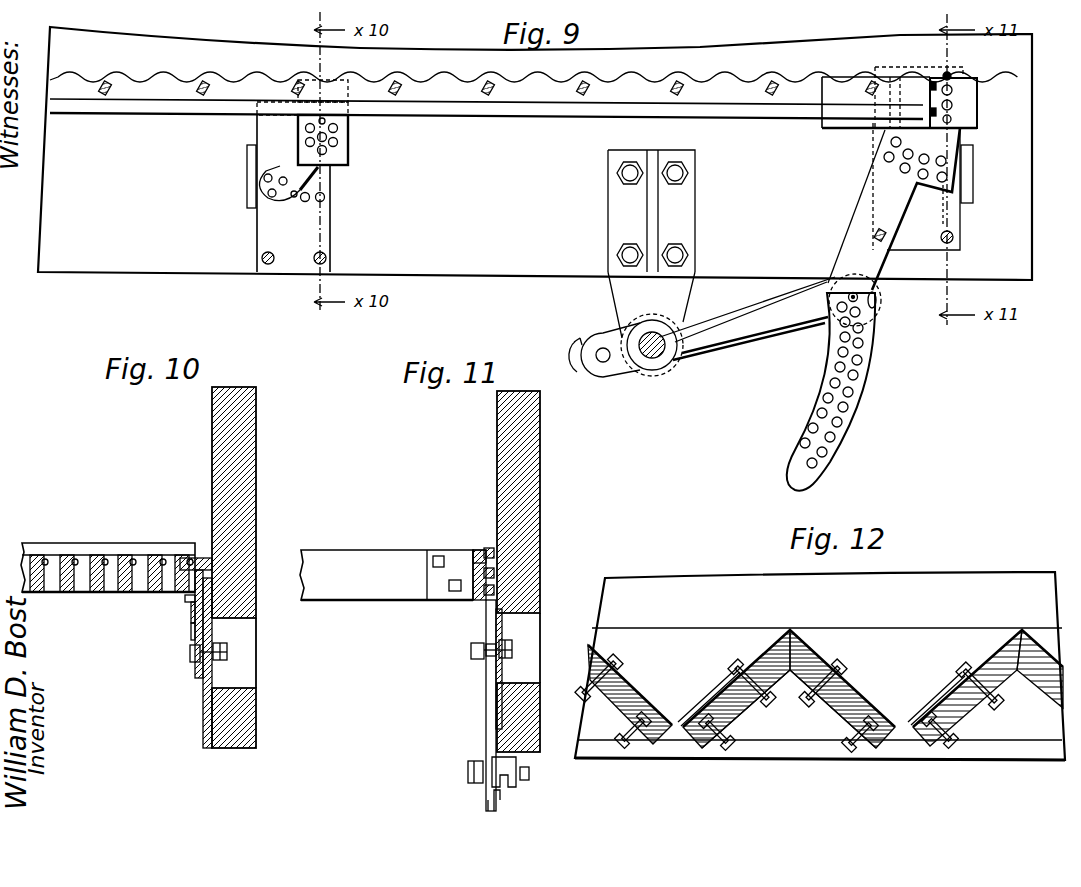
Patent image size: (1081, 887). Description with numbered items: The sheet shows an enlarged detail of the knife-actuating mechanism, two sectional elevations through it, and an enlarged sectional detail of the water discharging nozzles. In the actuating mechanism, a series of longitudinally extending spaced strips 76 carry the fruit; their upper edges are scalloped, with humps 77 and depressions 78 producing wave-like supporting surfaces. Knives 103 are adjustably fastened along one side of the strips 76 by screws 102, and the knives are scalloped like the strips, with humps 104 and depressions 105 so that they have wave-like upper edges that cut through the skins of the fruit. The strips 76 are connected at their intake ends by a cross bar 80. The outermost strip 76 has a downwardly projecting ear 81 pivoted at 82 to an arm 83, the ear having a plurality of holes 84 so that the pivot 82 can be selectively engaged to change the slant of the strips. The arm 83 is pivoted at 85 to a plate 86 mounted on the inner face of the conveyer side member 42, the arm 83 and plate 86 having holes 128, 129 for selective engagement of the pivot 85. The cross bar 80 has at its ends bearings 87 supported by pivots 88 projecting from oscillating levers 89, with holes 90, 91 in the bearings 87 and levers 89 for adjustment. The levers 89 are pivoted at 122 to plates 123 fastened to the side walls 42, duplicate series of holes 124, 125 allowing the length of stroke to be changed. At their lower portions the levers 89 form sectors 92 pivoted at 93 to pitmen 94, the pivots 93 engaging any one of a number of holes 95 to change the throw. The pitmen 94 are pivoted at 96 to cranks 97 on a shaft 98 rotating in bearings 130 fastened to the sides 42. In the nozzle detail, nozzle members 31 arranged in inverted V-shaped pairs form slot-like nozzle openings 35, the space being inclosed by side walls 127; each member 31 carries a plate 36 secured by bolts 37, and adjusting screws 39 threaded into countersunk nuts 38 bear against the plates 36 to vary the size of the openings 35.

In FIG. 12, the nozzle member 31 is at (1010, 765).
In FIG. 12, the nozzle opening 35 is at (905, 715).
In FIG. 12, the plate 36 is at (930, 665).
In FIG. 12, the bolt 37 is at (970, 646).
In FIG. 12, the nut 38 is at (892, 765).
In FIG. 12, the adjusting screw 39 is at (945, 770).
In FIG. 9, the side member 42 is at (120, 256).
In FIG. 10, the side member 42 is at (245, 465).
In FIG. 11, the side member 42 is at (540, 448).
In FIG. 9, the strip 76 is at (118, 114).
In FIG. 10, the strip 76 is at (100, 600).
In FIG. 10, the hump 77 is at (41, 539).
In FIG. 10, the depression 78 is at (68, 550).
In FIG. 9, the cross bar 80 is at (905, 90).
In FIG. 11, the cross bar 80 is at (345, 550).
In FIG. 9, the ear 81 is at (348, 129).
In FIG. 10, the ear 81 is at (191, 632).
In FIG. 9, the pivot 82 is at (300, 110).
In FIG. 10, the pivot 82 is at (185, 598).
In FIG. 9, the arm 83 is at (283, 152).
In FIG. 10, the arm 83 is at (200, 672).
In FIG. 9, the hole 84 is at (333, 150).
In FIG. 10, the hole 84 is at (191, 612).
In FIG. 9, the pivot 85 is at (292, 172).
In FIG. 10, the pivot 85 is at (190, 652).
In FIG. 9, the plate 86 is at (268, 240).
In FIG. 10, the plate 86 is at (203, 712).
In FIG. 9, the bearing 87 is at (962, 78).
In FIG. 11, the bearing 87 is at (474, 602).
In FIG. 9, the pivot 88 is at (952, 90).
In FIG. 11, the pivot 88 is at (480, 550).
In FIG. 9, the oscillating lever 89 is at (855, 245).
In FIG. 11, the oscillating lever 89 is at (488, 692).
In FIG. 9, the hole 90 is at (952, 105).
In FIG. 11, the hole 90 is at (473, 580).
In FIG. 9, the hole 91 is at (950, 74).
In FIG. 11, the hole 91 is at (494, 572).
In FIG. 9, the sector 92 is at (872, 385).
In FIG. 9, the pivot 93 is at (860, 302).
In FIG. 11, the pivot 93 is at (468, 770).
In FIG. 9, the pitman 94 is at (768, 330).
In FIG. 11, the pitman 94 is at (516, 790).
In FIG. 9, the hole 95 is at (848, 420).
In FIG. 9, the pivot 96 is at (610, 360).
In FIG. 9, the crank 97 is at (628, 373).
In FIG. 9, the shaft 98 is at (660, 360).
In FIG. 9, the screw 102 is at (776, 86).
In FIG. 10, the screw 102 is at (130, 600).
In FIG. 9, the knife 103 is at (646, 86).
In FIG. 10, the knife 103 is at (75, 605).
In FIG. 11, the knife 103 is at (385, 550).
In FIG. 9, the hump 104 is at (772, 86).
In FIG. 10, the hump 104 is at (128, 555).
In FIG. 9, the depression 105 is at (475, 71).
In FIG. 10, the depression 105 is at (162, 556).
In FIG. 9, the pivot 122 is at (945, 178).
In FIG. 11, the pivot 122 is at (471, 652).
In FIG. 9, the plate 123 is at (952, 212).
In FIG. 11, the plate 123 is at (497, 672).
In FIG. 9, the hole 124 is at (891, 144).
In FIG. 11, the hole 124 is at (486, 633).
In FIG. 11, the hole 125 is at (512, 633).
In FIG. 12, the side wall 127 is at (790, 578).
In FIG. 9, the hole 128 is at (264, 180).
In FIG. 9, the hole 129 is at (322, 196).
In FIG. 10, the hole 129 is at (217, 668).
In FIG. 9, the bearing 130 is at (625, 287).